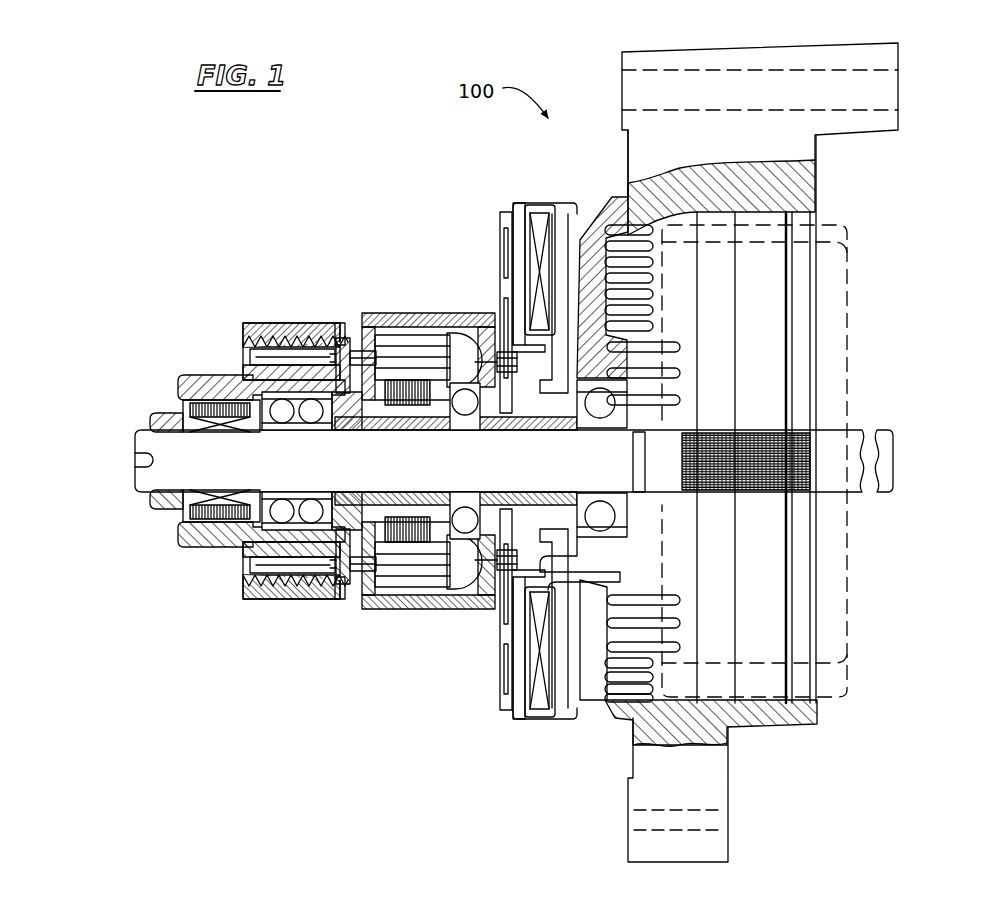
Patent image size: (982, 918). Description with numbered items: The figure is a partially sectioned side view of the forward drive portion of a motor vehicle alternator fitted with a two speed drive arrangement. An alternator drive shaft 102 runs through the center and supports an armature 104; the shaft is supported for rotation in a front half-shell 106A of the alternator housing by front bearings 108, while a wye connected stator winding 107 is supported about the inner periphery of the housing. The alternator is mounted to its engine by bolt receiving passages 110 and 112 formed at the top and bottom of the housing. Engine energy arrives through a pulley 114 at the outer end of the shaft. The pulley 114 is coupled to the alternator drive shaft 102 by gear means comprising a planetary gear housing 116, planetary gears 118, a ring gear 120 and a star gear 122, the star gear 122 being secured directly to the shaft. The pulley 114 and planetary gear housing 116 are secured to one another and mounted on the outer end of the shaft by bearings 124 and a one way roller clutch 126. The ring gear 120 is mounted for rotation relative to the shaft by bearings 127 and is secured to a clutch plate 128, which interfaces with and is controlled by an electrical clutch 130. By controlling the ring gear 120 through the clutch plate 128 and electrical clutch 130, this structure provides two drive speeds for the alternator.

The alternator drive shaft 102 is at (563, 478).
The armature 104 is at (848, 288).
The front half-shell 106A is at (827, 124).
The wye connected stator winding 107 is at (843, 223).
The front bearings 108 is at (625, 402).
The bolt receiving passage 110 is at (692, 808).
The bolt receiving passage 112 is at (862, 74).
The pulley 114 is at (236, 362).
The planetary gear housing 116 is at (352, 336).
The planetary gears 118 is at (430, 340).
The ring gear 120 is at (410, 318).
The star gear 122 is at (368, 408).
The bearings 124 is at (278, 410).
The one way roller clutch 126 is at (170, 516).
The bearings 127 is at (463, 512).
The clutch plate 128 is at (498, 220).
The electrical clutch 130 is at (540, 228).